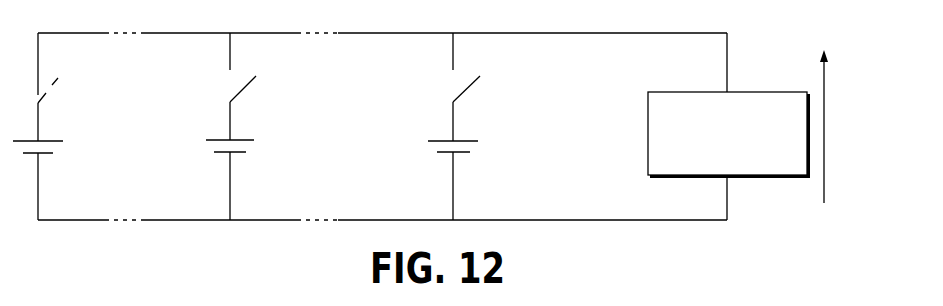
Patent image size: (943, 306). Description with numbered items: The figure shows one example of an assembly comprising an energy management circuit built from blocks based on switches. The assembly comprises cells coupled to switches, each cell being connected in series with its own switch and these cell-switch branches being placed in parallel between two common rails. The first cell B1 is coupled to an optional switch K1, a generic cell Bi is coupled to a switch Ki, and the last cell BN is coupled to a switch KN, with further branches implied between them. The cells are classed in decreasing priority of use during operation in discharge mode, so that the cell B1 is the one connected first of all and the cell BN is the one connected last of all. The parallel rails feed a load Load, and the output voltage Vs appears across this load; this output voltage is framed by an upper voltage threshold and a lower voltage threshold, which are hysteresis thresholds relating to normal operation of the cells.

The switch K1 is at (113, 100).
The cell B1 is at (58, 158).
The switch Ki is at (253, 96).
The cell Bi is at (248, 157).
The switch KN is at (480, 97).
The cell BN is at (475, 157).
The load Load is at (728, 134).
The output voltage Vs is at (837, 126).